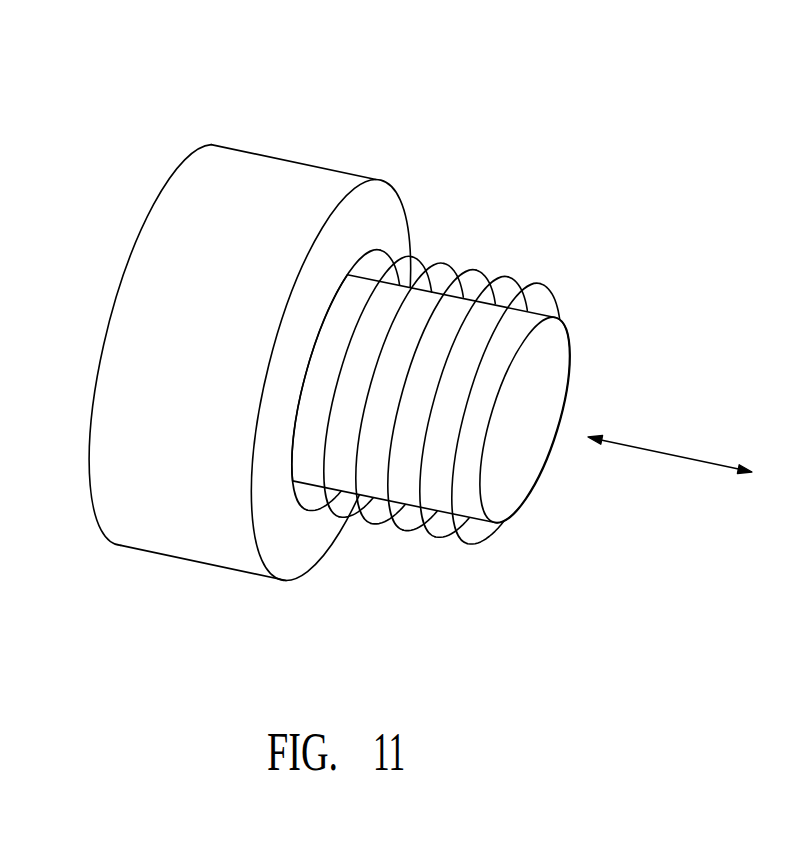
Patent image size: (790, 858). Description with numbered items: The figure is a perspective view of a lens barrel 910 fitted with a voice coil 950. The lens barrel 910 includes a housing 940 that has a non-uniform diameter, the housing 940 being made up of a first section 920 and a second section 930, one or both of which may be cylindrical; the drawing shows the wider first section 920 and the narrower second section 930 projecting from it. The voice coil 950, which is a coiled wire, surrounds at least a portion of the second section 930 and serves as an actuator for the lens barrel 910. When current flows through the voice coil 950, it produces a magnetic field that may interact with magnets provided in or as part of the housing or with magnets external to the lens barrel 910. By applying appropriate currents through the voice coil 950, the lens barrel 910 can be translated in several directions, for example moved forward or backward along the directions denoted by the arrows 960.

The lens barrel 910 is at (195, 92).
The first section 920 is at (487, 390).
The second section 930 is at (273, 178).
The housing 940 is at (657, 167).
The voice coil 950 is at (490, 548).
The arrows 960 is at (663, 453).